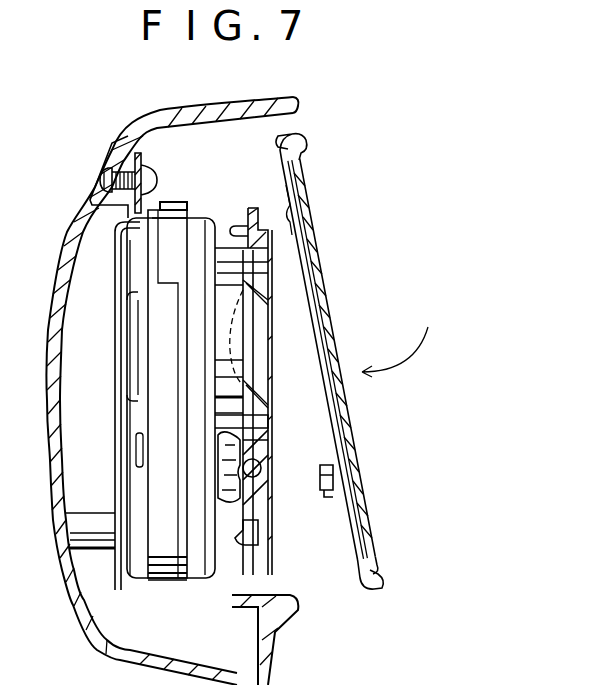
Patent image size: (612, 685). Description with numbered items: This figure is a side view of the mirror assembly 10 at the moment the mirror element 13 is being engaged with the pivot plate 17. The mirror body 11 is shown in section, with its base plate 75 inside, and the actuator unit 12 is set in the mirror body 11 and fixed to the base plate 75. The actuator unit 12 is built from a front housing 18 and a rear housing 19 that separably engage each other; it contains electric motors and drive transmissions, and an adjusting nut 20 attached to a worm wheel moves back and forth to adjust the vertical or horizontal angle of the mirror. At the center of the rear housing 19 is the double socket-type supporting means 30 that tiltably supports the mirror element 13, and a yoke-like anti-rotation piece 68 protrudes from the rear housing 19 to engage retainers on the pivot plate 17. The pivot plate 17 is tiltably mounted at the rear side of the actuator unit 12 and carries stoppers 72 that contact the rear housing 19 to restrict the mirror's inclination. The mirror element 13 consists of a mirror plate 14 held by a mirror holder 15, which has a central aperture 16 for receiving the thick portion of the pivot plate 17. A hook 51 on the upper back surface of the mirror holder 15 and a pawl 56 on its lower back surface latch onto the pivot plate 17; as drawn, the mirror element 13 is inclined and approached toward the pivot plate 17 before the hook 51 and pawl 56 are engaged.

The assembly 10 is at (176, 105).
The mirror body 11 is at (250, 105).
The actuator unit 12 is at (176, 594).
The mirror element 13 is at (335, 228).
The mirror plate 14 is at (310, 182).
The mirror holder 15 is at (292, 190).
The aperture 16 is at (312, 336).
The pivot plate 17 is at (267, 521).
The front housing 18 is at (136, 565).
The rear housing 19 is at (202, 560).
The adjusting nut 20 is at (233, 540).
The supporting means 30 is at (280, 354).
The hook 51 is at (292, 238).
The pawl 56 is at (320, 482).
The anti-rotation piece 68 is at (272, 422).
The stopper 72 is at (240, 226).
The base plate 75 is at (120, 484).